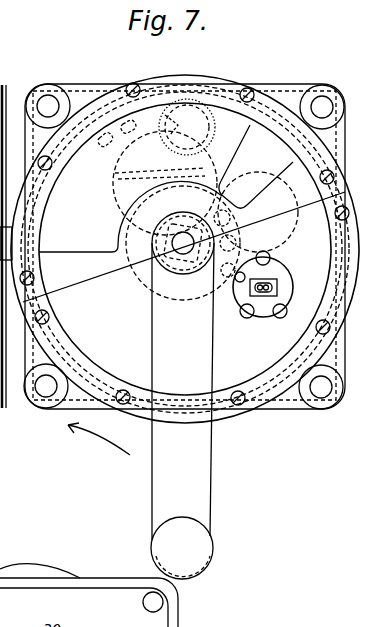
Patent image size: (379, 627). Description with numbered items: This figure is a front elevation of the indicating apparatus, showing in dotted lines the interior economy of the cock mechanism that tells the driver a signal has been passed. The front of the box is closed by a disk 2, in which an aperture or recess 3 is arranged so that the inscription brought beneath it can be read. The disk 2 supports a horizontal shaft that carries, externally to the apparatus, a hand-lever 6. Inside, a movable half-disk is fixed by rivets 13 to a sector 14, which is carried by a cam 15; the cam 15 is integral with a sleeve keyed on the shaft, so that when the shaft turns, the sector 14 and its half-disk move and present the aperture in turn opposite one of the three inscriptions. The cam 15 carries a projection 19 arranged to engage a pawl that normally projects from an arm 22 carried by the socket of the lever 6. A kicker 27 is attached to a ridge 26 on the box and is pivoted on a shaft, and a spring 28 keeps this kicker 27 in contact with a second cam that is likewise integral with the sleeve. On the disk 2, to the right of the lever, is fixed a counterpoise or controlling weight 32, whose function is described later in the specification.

The disk 2 is at (184, 246).
The aperture or recess 3 is at (47, 222).
The hand-lever 6 is at (182, 411).
The rivets 13 is at (227, 268).
The sector 14 is at (247, 288).
The cam 15 is at (183, 193).
The projection 19 is at (242, 276).
The arm 22 is at (165, 183).
The ridge 26 is at (200, 118).
The kicker 27 is at (238, 175).
The spring 28 is at (172, 122).
The counterpoise or controlling weight 32 is at (270, 283).